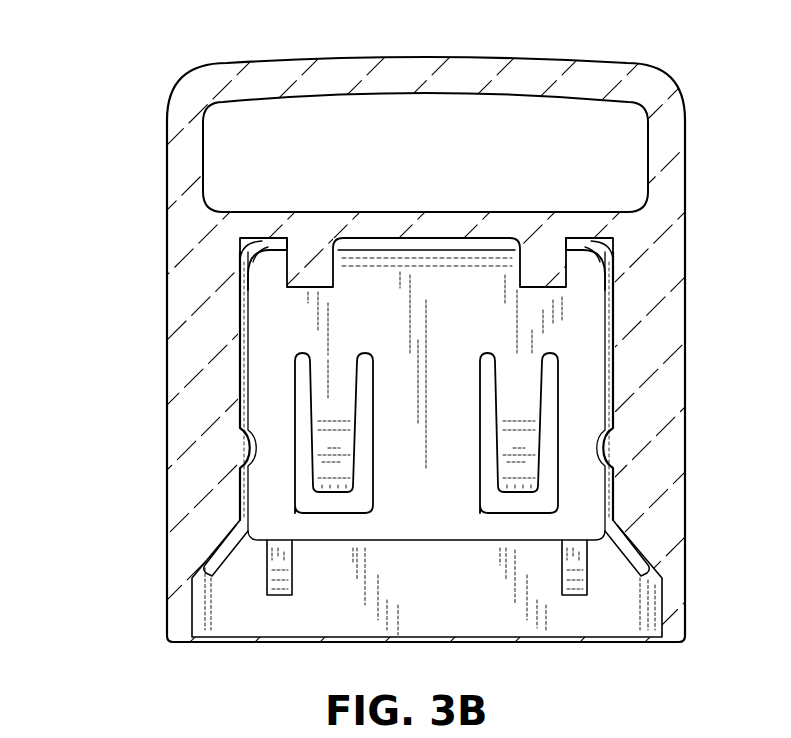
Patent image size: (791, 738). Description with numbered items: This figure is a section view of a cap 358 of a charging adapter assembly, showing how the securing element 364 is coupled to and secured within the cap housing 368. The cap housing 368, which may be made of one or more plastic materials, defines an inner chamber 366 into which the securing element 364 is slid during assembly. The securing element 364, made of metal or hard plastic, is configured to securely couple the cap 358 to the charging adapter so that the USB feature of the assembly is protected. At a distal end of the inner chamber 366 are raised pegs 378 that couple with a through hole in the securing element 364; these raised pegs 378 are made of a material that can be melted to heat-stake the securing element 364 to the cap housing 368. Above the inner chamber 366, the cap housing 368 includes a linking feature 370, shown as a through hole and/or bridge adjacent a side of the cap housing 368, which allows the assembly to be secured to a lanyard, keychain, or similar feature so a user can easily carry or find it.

The cap 358 is at (135, 92).
The linking feature 370 is at (672, 76).
The cap housing 368 is at (653, 323).
The securing element 364 is at (575, 490).
The inner chamber 366 is at (567, 613).
The raised pegs 378 is at (313, 274).